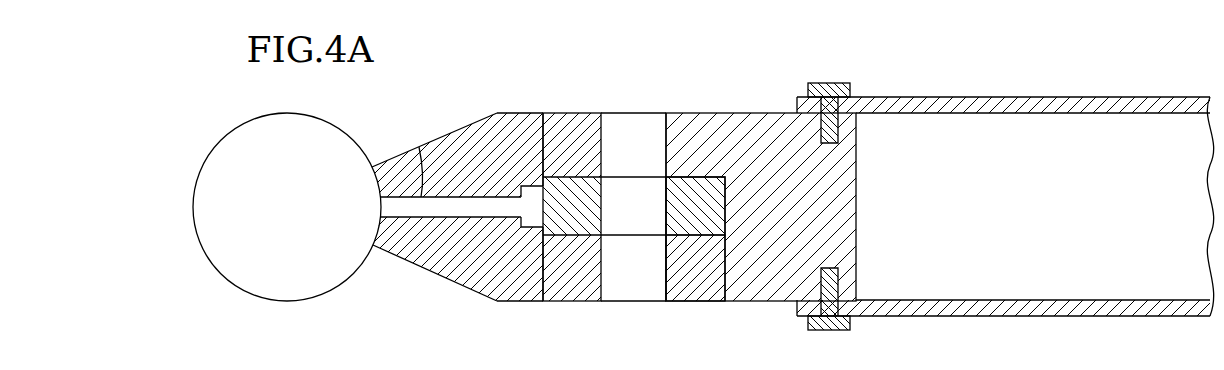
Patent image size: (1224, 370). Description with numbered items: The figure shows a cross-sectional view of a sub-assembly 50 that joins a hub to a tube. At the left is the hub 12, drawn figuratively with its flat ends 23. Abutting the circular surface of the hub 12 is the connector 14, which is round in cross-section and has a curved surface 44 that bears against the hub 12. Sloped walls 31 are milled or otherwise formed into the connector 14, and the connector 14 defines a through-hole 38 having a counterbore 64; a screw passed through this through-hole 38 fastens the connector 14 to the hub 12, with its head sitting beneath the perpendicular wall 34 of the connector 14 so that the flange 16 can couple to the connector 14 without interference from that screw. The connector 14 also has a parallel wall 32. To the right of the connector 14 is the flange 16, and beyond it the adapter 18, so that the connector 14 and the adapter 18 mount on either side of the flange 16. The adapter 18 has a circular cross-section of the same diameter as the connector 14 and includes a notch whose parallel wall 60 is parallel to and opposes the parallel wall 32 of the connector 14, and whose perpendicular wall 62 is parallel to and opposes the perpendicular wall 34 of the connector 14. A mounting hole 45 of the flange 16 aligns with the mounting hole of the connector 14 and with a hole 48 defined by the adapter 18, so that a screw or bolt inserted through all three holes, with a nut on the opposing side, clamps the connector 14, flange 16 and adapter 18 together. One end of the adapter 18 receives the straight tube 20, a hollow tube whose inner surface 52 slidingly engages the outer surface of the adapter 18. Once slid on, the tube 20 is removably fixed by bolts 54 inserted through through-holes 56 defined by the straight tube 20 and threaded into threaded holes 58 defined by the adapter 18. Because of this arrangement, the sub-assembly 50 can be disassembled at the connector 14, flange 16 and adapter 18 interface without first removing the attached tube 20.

The hub 12 is at (200, 162).
The connector 14 is at (498, 301).
The flange 16 is at (705, 237).
The adapter 18 is at (773, 112).
The straight tube 20 is at (1086, 317).
The flat ends 23 is at (299, 189).
The sloped walls 31 is at (438, 137).
The parallel wall 32 is at (543, 268).
The perpendicular wall 34 is at (543, 143).
The through-hole 38 is at (418, 157).
The curved surface 44 is at (378, 178).
The mounting hole 45 is at (602, 142).
The hole 48 is at (666, 132).
The sub-assembly 50 is at (175, 217).
The inner surface 52 is at (1037, 113).
The bolts 54 is at (832, 82).
The through-holes 56 is at (866, 102).
The threaded holes 58 is at (840, 128).
The parallel wall 60 is at (687, 185).
The perpendicular wall 62 is at (717, 293).
The counterbore 64 is at (529, 185).